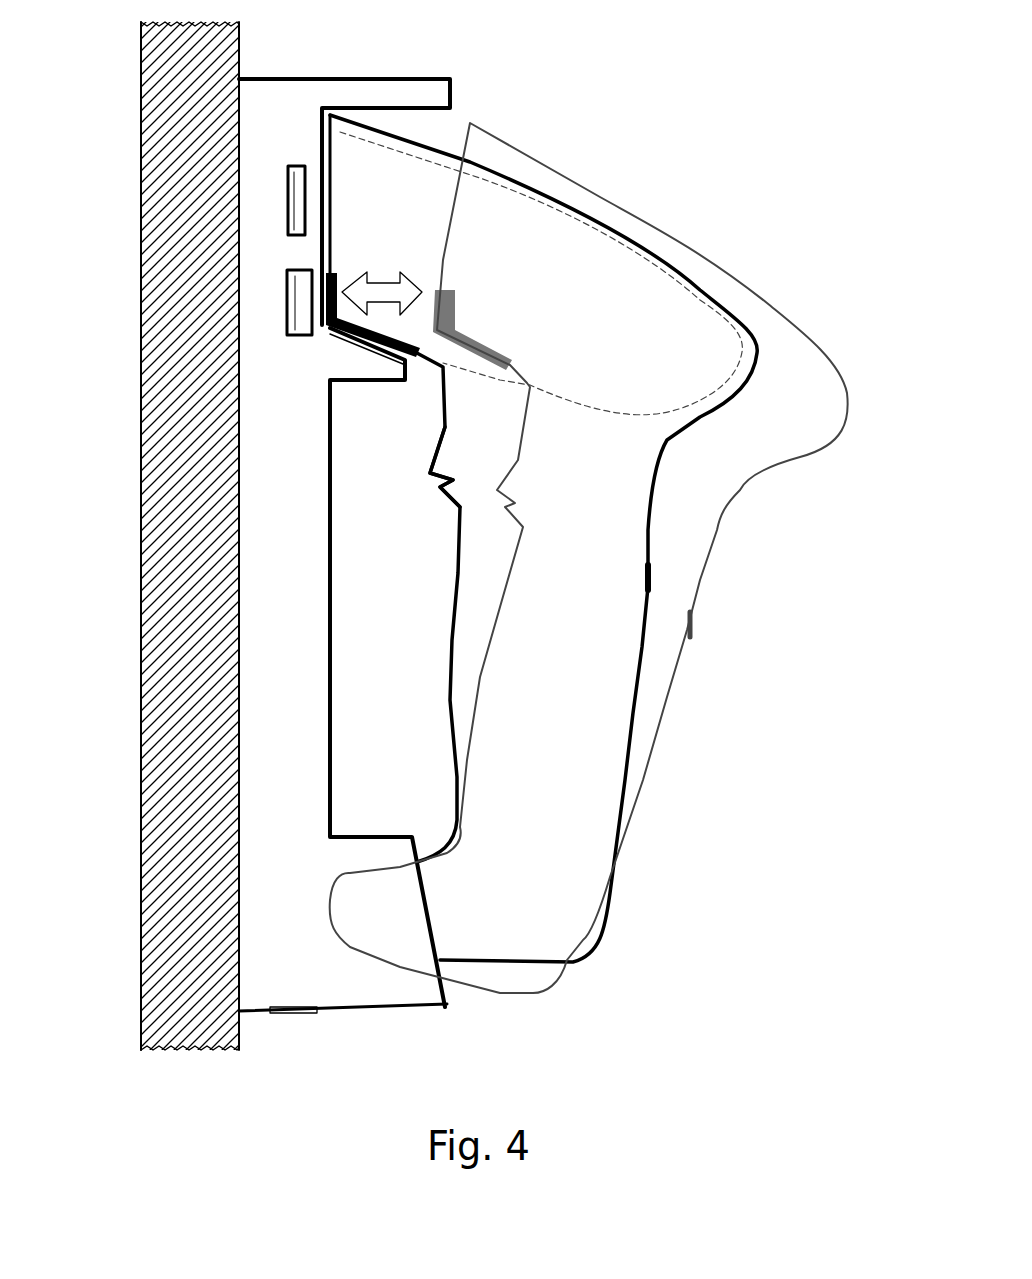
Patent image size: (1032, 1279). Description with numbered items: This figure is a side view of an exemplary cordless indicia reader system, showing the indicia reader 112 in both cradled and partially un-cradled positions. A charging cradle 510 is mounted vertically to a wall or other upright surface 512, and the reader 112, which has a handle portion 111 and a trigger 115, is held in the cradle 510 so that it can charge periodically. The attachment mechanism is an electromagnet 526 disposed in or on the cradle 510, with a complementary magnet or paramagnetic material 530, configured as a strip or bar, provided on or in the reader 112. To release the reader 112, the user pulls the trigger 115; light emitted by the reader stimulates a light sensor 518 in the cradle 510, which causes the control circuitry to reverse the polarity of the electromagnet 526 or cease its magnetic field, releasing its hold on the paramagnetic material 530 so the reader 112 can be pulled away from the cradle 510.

The wall or other upright surface 512 is at (143, 83).
The cradle 510 is at (317, 967).
The light sensor 518 is at (287, 197).
The electromagnet 526 is at (287, 308).
The paramagnetic material 530 is at (413, 347).
The handle portion 111 is at (615, 533).
The indicia reader 112 is at (722, 203).
The trigger 115 is at (443, 462).